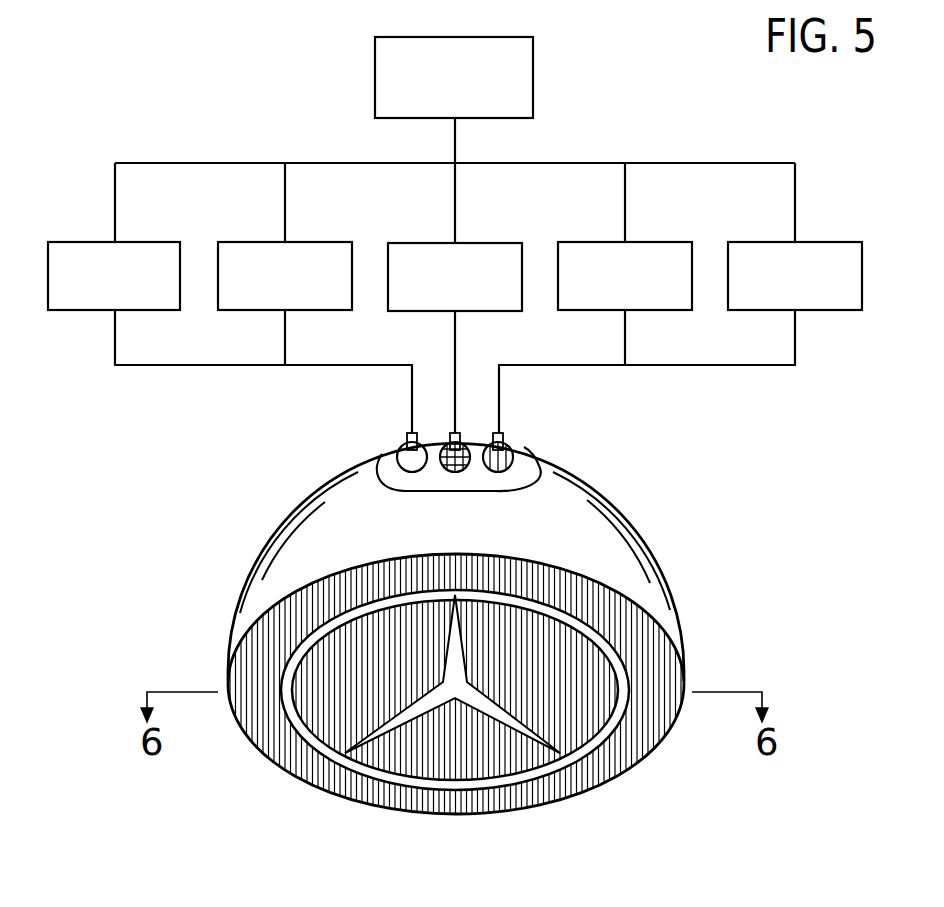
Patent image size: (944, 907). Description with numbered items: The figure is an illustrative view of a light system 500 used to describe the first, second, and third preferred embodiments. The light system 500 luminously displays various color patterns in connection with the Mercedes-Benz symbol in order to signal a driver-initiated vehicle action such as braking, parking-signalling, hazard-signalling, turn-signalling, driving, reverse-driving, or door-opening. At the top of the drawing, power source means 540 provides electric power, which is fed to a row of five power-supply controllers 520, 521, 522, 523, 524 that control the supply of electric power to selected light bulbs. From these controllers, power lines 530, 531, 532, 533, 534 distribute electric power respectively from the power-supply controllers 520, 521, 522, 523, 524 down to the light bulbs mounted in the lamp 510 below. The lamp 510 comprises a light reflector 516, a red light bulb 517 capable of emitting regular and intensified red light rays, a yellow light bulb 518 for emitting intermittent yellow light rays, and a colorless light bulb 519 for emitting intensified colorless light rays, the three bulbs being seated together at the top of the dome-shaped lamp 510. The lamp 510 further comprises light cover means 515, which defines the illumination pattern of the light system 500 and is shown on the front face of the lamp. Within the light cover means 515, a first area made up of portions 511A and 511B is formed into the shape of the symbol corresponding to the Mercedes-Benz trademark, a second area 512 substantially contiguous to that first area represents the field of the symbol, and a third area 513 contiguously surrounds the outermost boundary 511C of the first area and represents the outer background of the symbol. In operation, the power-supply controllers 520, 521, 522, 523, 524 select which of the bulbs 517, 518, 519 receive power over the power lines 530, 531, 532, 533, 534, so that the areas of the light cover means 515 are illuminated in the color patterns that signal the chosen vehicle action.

The light system 500 is at (186, 512).
The lamp 510 is at (228, 590).
The first area portion 511A is at (332, 755).
The first area portion 511B is at (393, 727).
The outermost boundary of first area 511C is at (290, 722).
The second area 512 is at (522, 760).
The third area 513 is at (625, 755).
The light cover means 515 is at (470, 818).
The light reflector 516 is at (643, 535).
The red light bulb 517 is at (505, 433).
The yellow light bulb 518 is at (450, 433).
The colorless light bulb 519 is at (403, 433).
The power-supply controller 520 is at (824, 242).
The power-supply controller 521 is at (650, 242).
The power-supply controller 522 is at (484, 243).
The power-supply controller 523 is at (314, 242).
The power-supply controller 524 is at (146, 242).
The power line 530 is at (796, 350).
The power line 531 is at (626, 350).
The power line 532 is at (456, 350).
The power line 533 is at (285, 350).
The power line 534 is at (115, 350).
The power source means 540 is at (533, 82).